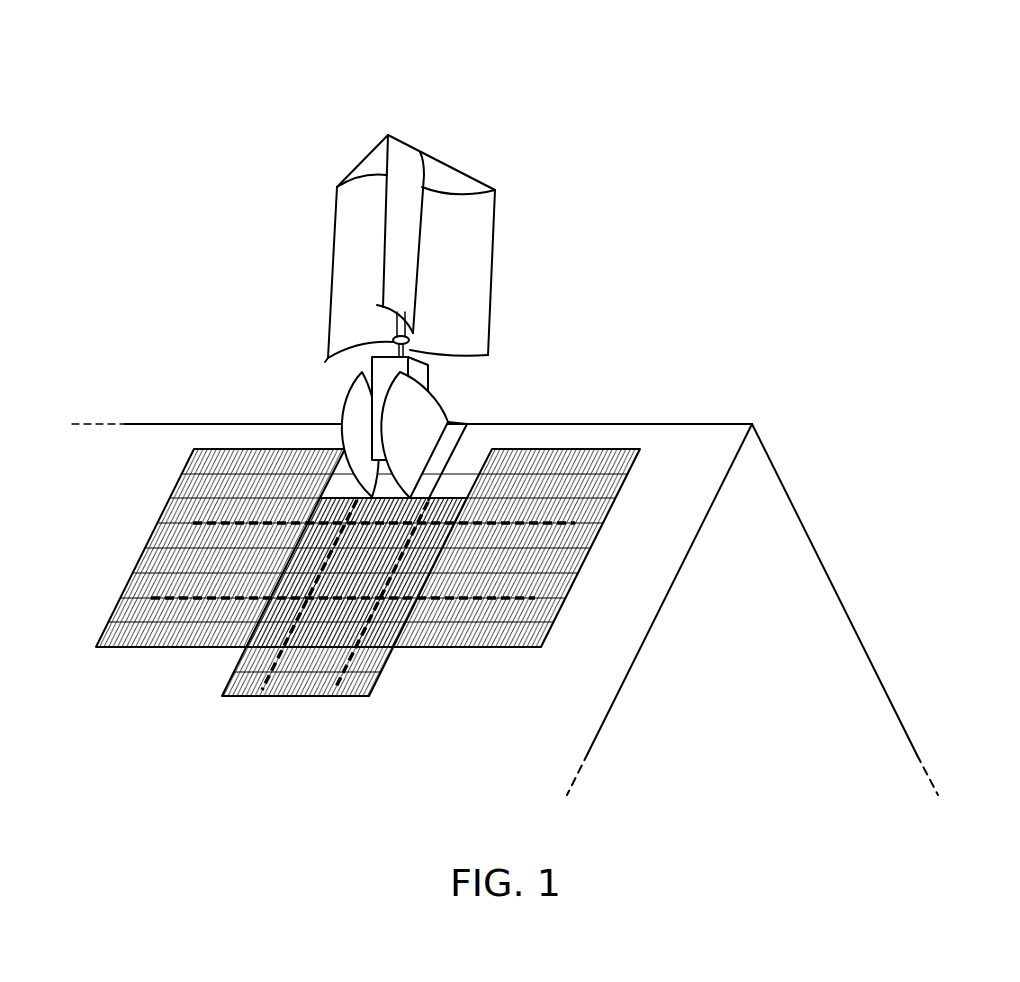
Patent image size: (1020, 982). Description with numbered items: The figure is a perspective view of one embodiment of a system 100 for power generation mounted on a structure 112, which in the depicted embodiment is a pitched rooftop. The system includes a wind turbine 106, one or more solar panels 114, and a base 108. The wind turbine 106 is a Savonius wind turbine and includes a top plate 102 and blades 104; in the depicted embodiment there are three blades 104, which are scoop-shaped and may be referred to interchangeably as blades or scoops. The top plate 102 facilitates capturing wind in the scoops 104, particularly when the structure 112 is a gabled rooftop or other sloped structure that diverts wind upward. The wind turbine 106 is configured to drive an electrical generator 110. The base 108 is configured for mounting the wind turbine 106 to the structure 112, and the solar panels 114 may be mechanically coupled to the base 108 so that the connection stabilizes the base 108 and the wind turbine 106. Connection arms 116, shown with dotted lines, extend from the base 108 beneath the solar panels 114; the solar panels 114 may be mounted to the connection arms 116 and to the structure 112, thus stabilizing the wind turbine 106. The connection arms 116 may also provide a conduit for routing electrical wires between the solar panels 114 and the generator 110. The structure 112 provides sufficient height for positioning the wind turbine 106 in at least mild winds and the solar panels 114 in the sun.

The system for power generation 100 is at (160, 67).
The top plate 102 is at (361, 157).
The blades 104 is at (336, 206).
The wind turbine 106 is at (420, 247).
The base 108 is at (357, 377).
The electrical generator 110 is at (430, 374).
The structure 112 is at (686, 422).
The solar panels 114 is at (188, 462).
The connection arms 116 is at (253, 697).